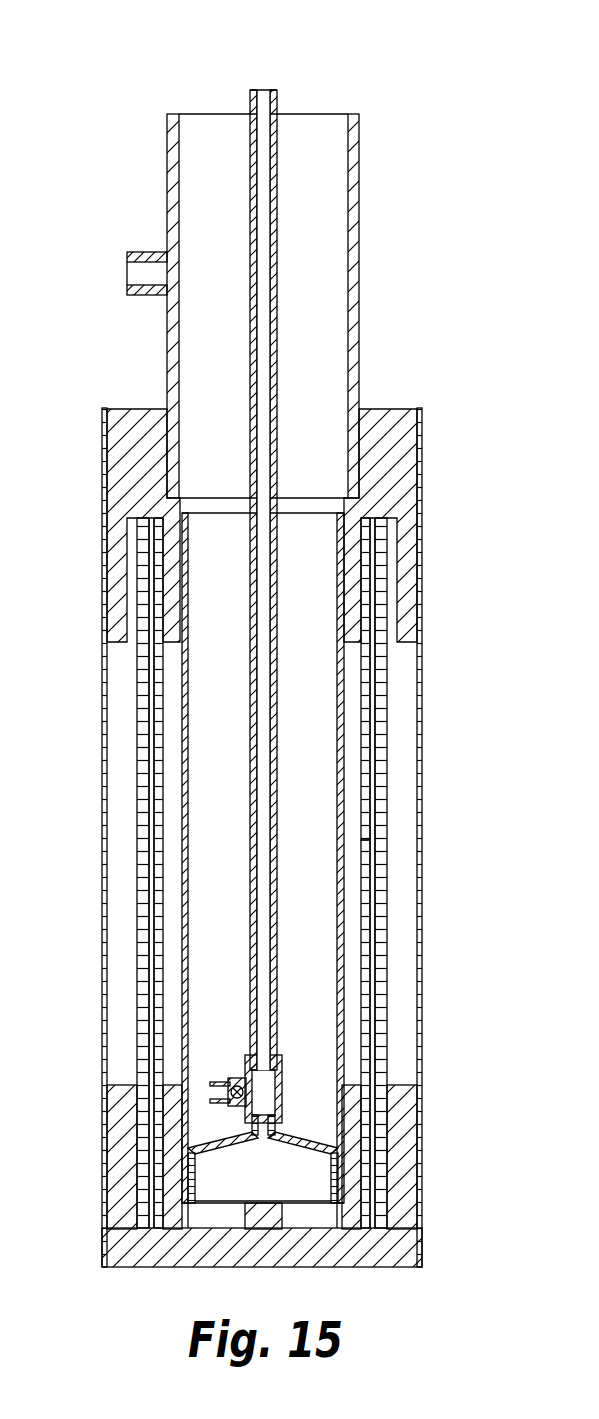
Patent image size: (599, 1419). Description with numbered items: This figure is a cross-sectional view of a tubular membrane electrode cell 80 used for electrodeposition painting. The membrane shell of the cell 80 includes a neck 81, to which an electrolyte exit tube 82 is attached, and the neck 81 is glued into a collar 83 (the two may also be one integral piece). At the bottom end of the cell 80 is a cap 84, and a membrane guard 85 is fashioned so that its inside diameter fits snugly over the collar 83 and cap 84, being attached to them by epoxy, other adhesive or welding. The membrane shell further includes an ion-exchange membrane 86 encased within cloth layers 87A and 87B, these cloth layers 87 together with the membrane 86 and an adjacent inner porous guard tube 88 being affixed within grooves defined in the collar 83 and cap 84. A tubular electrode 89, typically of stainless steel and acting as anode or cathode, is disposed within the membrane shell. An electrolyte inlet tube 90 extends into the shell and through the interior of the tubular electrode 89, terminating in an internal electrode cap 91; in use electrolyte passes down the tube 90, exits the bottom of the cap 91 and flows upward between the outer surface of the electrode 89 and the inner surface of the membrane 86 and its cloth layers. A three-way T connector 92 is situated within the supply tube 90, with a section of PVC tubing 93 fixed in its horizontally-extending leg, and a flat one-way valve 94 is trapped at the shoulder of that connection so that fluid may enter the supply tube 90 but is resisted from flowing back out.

The membrane electrode cell 80 is at (404, 128).
The neck 81 is at (360, 237).
The electrolyte exit tube 82 is at (141, 252).
The collar 83 is at (376, 408).
The cap 84 is at (381, 1268).
The membrane guard 85 is at (102, 498).
The membrane 86 is at (149, 882).
The cloth layers 87 is at (154, 808).
The cloth layer 87A is at (387, 782).
The cloth layer 87B is at (387, 905).
The inner porous guard tube 88 is at (137, 728).
The tubular electrode 89 is at (345, 523).
The electrolyte inlet tube 90 is at (278, 102).
The internal electrode cap 91 is at (312, 1142).
The T connector 92 is at (282, 1083).
The tubing 93 is at (226, 1079).
The one-way valve 94 is at (212, 1092).